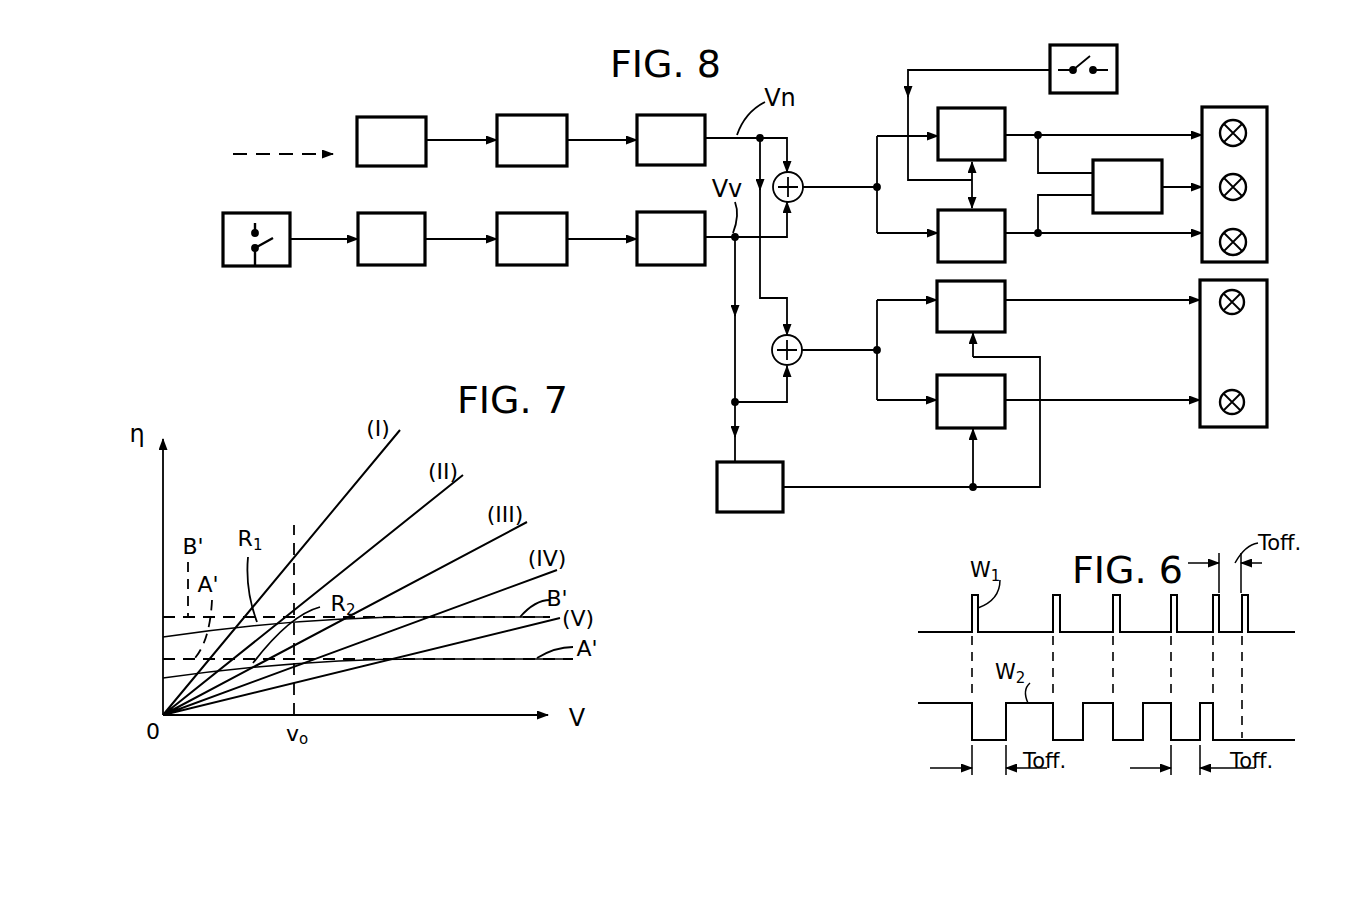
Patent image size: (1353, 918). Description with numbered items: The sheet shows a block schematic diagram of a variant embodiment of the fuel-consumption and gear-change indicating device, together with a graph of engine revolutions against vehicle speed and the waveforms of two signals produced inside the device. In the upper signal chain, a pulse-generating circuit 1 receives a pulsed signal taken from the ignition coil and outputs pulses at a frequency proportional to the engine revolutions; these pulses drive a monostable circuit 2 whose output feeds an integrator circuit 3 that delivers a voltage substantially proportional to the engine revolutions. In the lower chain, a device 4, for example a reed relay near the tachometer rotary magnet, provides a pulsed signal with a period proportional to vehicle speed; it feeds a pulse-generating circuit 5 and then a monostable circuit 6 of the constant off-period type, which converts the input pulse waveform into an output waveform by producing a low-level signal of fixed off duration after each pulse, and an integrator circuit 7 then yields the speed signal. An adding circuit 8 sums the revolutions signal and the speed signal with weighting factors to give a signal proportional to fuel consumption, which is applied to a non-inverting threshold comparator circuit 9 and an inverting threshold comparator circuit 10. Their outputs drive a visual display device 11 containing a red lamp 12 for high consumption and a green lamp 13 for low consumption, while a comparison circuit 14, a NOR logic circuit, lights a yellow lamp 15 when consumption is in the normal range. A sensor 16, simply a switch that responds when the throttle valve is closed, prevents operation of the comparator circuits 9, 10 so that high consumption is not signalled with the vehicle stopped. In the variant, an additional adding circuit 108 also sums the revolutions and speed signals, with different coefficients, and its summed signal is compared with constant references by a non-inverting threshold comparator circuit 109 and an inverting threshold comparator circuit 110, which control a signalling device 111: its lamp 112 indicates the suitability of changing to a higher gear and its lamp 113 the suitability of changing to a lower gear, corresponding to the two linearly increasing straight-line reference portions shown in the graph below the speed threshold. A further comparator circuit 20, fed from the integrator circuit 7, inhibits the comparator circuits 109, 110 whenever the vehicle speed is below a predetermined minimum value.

The pulse-generating circuit 1 is at (392, 130).
The monostable circuit 2 is at (528, 124).
The integrator circuit 3 is at (670, 127).
The device 4 is at (275, 253).
The pulse-generating circuit 5 is at (395, 258).
The monostable circuit 6 is at (538, 255).
The integrator circuit 7 is at (670, 250).
The adding circuit 8 is at (800, 178).
The threshold comparator circuit 9 is at (975, 122).
The threshold comparator circuit 10 is at (973, 227).
The visual display device 11 is at (1258, 167).
The lamp 12 is at (1233, 120).
The lamp 13 is at (1246, 242).
The comparison circuit 14 is at (1137, 175).
The lamp 15 is at (1246, 187).
The sensor 16 is at (1117, 57).
The comparator circuit 20 is at (747, 490).
The adding circuit 108 is at (800, 337).
The threshold comparator circuit 109 is at (982, 300).
The threshold comparator circuit 110 is at (955, 410).
The signalling device 111 is at (1265, 353).
The lamp 112 is at (1244, 300).
The lamp 113 is at (1244, 400).